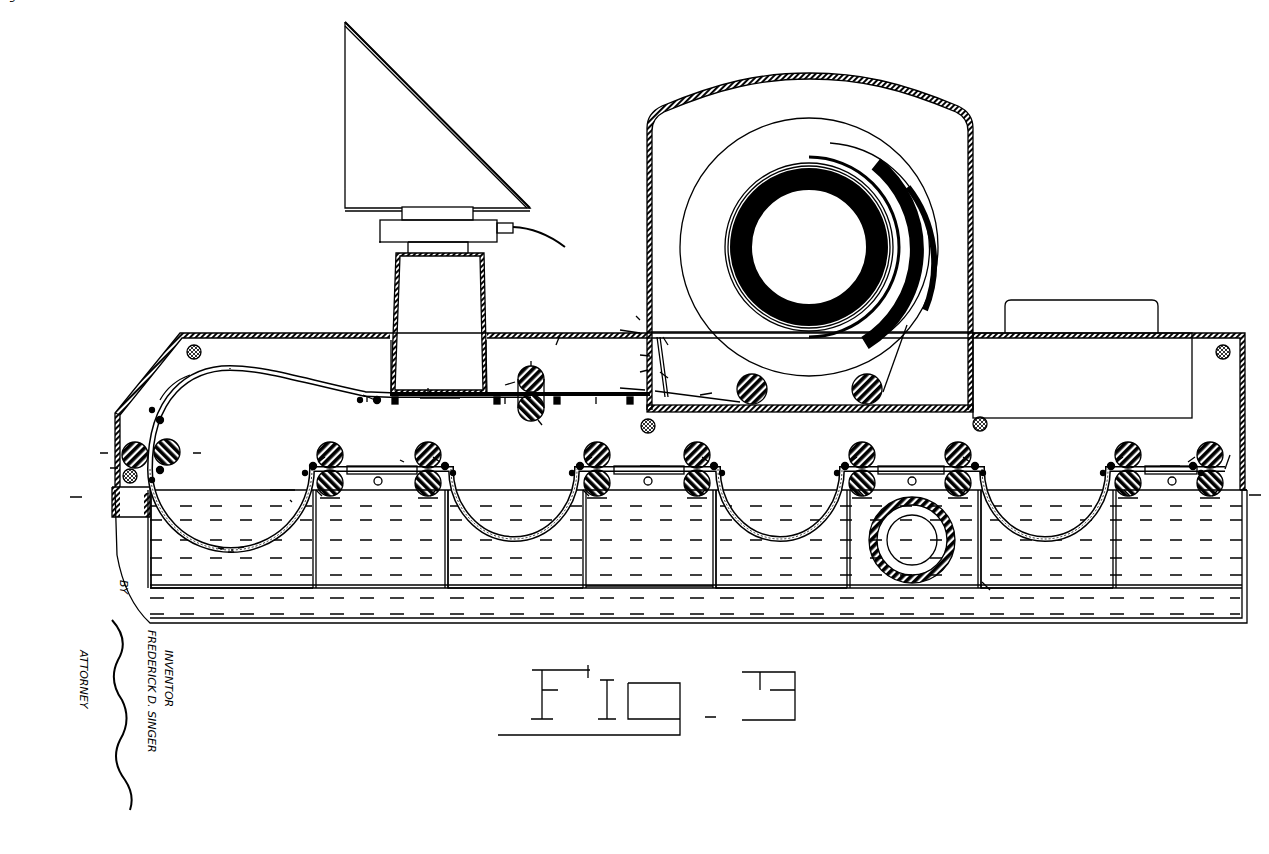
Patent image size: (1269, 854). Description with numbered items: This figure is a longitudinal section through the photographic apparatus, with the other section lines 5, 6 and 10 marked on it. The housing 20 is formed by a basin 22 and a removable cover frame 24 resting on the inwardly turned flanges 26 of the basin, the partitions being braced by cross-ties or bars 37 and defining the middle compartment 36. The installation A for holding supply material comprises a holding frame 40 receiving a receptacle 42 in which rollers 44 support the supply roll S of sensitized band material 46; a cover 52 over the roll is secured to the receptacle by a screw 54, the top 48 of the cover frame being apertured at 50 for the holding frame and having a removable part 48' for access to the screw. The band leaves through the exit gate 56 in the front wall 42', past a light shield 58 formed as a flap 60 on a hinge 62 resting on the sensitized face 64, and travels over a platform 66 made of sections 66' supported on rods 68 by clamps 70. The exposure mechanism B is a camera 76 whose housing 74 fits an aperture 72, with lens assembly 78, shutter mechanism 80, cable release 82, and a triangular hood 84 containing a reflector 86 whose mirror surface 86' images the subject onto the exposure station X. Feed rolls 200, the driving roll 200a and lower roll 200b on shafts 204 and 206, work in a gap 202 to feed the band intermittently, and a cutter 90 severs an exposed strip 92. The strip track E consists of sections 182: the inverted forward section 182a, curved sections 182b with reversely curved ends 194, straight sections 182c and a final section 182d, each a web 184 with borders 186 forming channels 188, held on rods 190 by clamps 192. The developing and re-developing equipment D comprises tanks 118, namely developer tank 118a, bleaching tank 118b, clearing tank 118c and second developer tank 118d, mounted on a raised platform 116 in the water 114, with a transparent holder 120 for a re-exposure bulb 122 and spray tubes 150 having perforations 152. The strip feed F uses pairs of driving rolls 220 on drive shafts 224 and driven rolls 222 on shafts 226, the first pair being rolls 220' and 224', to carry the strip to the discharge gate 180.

The housing 20 is at (173, 296).
The basin 22 is at (371, 633).
The cover frame 24 is at (288, 330).
The inwardly turned flanges 26 is at (125, 492).
The middle compartment 36 is at (560, 325).
The cross-ties or bars 37 is at (204, 353).
The holding frame 40 is at (895, 412).
The receptacle 42 is at (1082, 359).
The front wall of the receptacle 42' is at (630, 372).
The rollers 44 is at (768, 393).
The sensitized photographic band material 46 is at (912, 369).
The top of the cover frame 48 is at (358, 343).
The removable part of the top 48' is at (510, 347).
The aperture 50 is at (640, 312).
The cover over the supply roll 52 is at (962, 120).
The screw 54 is at (640, 355).
The exit slot or gate 56 is at (620, 388).
The light shield 58 is at (677, 375).
The flap 60 is at (672, 385).
The hinge 62 is at (665, 350).
The sensitized face 64 is at (705, 392).
The platform 66 is at (520, 408).
The platform sections 66' is at (524, 412).
The transverse rods 68 is at (515, 410).
The clamps 70 is at (496, 406).
The aperture 72 is at (380, 335).
The camera housing 74 is at (487, 292).
The camera 76 is at (365, 229).
The lens assembly 78 is at (412, 199).
The shutter mechanism 80 is at (513, 226).
The cable release 82 is at (562, 246).
The triangular hood 84 is at (345, 34).
The reflector 86 is at (424, 117).
The mirror surface 86' is at (437, 115).
The cutter 90 is at (380, 385).
The strip 92 is at (245, 380).
The water 114 is at (618, 538).
The raised platform 116 is at (620, 582).
The tanks 118 is at (1116, 548).
The developer tank 118a is at (316, 506).
The bleaching solution tank 118b is at (586, 506).
The clearing solution tank 118c is at (700, 505).
The second developer tank 118d is at (1118, 512).
The transparent holder 120 is at (932, 568).
The electric light bulb 122 is at (922, 547).
The spray tubes 150 is at (382, 484).
The perforations 152 is at (764, 485).
The discharge slot or gate 180 is at (1237, 448).
The track sections 182 is at (687, 459).
The forward track section 182a is at (250, 372).
The curved track sections 182b is at (205, 541).
The straight track sections 182c is at (640, 465).
The tape flat section 182d is at (1170, 465).
The web 184 is at (295, 390).
The side borders 186 is at (303, 385).
The channels 188 is at (272, 382).
The transverse rods 190 is at (677, 441).
The clamps 192 is at (305, 474).
The reversely curved ends 194 is at (747, 447).
The feed rolls 200 is at (546, 388).
The driving feed roll 200a is at (546, 375).
The lower feed roll 200b is at (522, 420).
The gap 202 is at (505, 382).
The shaft 204 is at (532, 357).
The shaft 206 is at (545, 430).
The driving feed rolls 220 is at (770, 447).
The left upper roller 220' is at (185, 447).
The driven feed rolls 222 is at (655, 488).
The drive shafts 224 is at (770, 461).
The left lower roller 224' is at (206, 452).
The shafts 226 is at (767, 501).
The section line 5 is at (80, 488).
The section line 6 is at (123, 350).
The section line 10 is at (104, 446).
The installation for holding sensitized photographic supply material A is at (631, 317).
The exposure mechanism B is at (348, 245).
The developing and re-developing equipment D is at (990, 597).
The strip track E is at (286, 490).
The strip feed F is at (385, 442).
The supply roll S is at (910, 180).
The exposure station X is at (434, 380).